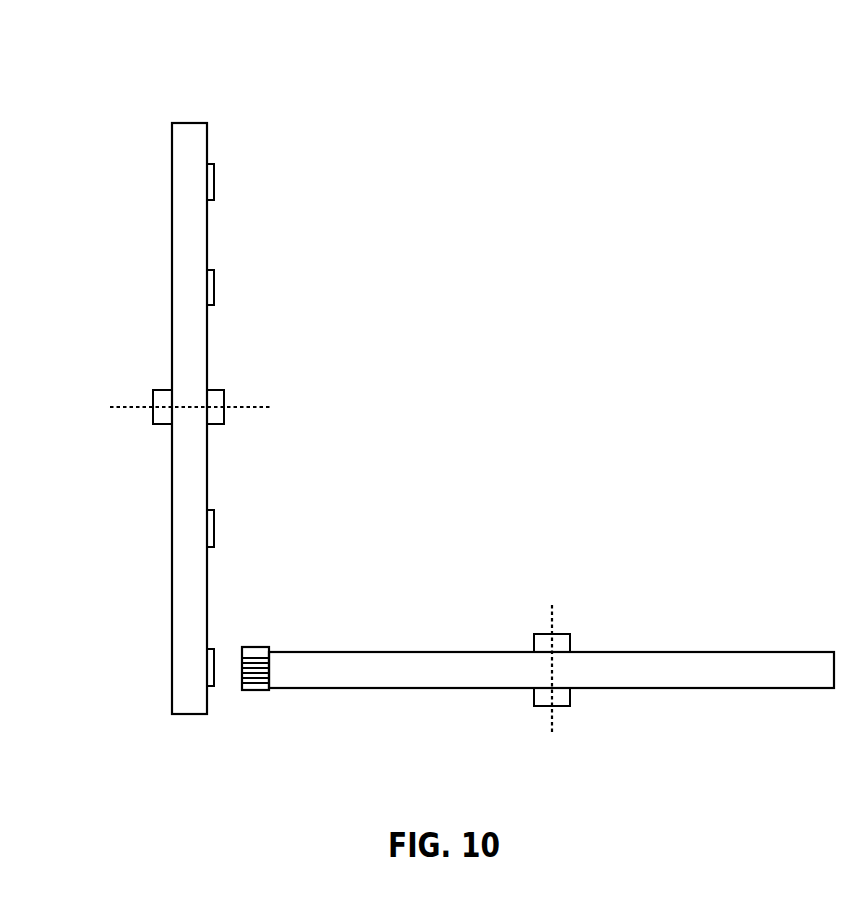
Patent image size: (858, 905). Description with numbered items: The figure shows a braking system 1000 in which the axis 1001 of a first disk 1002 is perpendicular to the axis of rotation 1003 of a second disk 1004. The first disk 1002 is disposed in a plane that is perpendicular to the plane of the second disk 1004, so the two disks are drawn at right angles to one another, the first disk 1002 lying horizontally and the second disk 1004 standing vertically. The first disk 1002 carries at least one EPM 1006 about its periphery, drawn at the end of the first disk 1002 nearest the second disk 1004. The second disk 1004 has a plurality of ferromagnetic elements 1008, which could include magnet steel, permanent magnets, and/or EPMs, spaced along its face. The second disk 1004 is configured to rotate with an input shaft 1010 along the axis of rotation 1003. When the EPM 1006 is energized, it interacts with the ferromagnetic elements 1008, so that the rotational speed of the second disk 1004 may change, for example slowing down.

The braking system 1000 is at (107, 90).
The axis 1001 is at (553, 620).
The first disk 1002 is at (305, 650).
The axis of rotation 1003 is at (252, 405).
The second disk 1004 is at (208, 227).
The EPM 1006 is at (260, 690).
The ferromagnetic elements 1008 is at (209, 163).
The input shaft 1010 is at (153, 390).